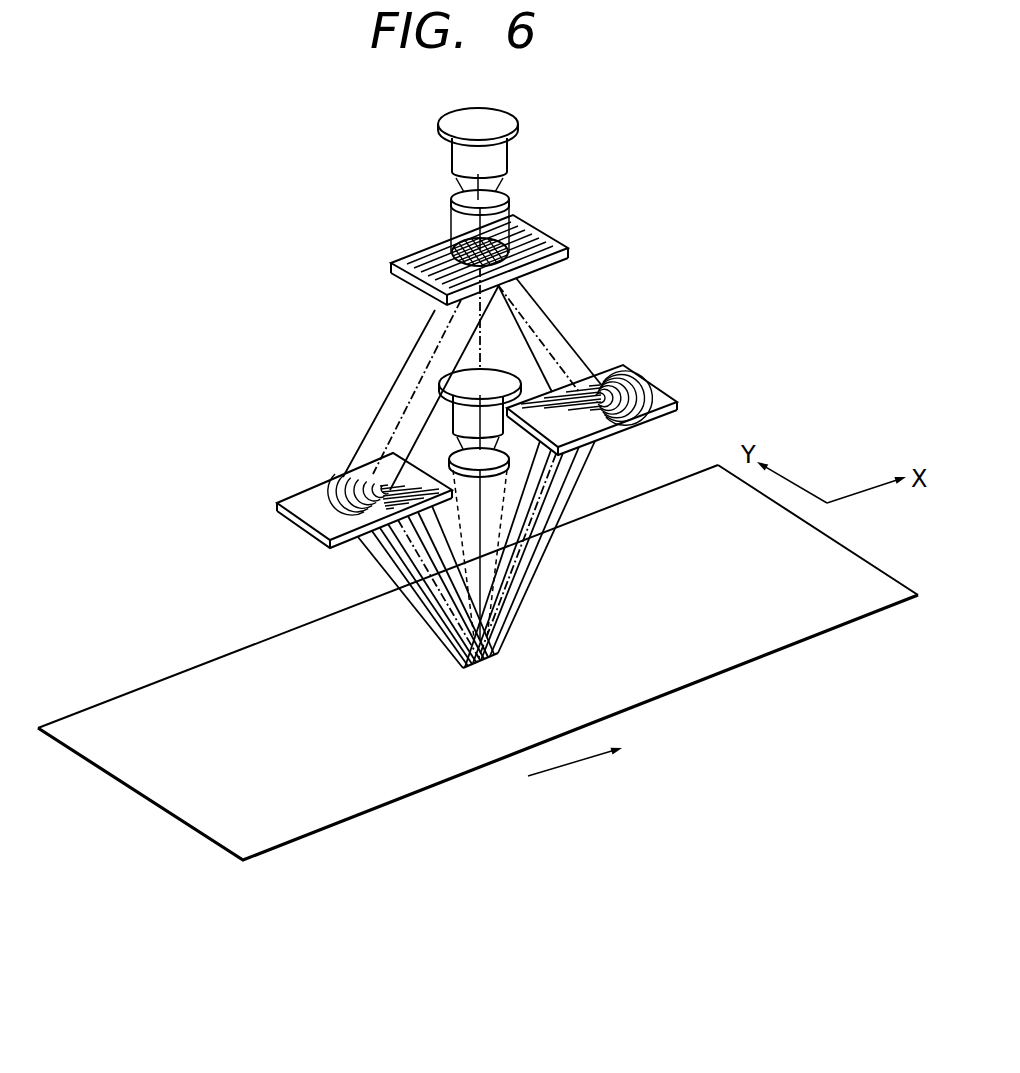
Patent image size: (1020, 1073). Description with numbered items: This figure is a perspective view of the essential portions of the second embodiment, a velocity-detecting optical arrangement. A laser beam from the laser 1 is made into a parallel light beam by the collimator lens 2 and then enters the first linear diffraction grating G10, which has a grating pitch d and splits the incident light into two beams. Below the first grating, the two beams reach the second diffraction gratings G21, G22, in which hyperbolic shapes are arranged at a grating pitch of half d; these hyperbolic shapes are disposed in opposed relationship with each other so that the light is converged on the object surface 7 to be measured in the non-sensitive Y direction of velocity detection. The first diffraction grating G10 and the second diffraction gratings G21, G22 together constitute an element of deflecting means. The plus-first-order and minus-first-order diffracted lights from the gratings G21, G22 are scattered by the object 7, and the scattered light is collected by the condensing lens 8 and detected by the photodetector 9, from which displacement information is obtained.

The laser 1 is at (515, 125).
The collimator lens 2 is at (506, 198).
The first linear diffraction grating G10 is at (530, 229).
The photodetector 9 is at (446, 379).
The condensing lens 8 is at (456, 456).
The second diffraction grating G21 is at (300, 501).
The second diffraction grating G22 is at (629, 373).
The object surface to be measured 7 is at (710, 662).